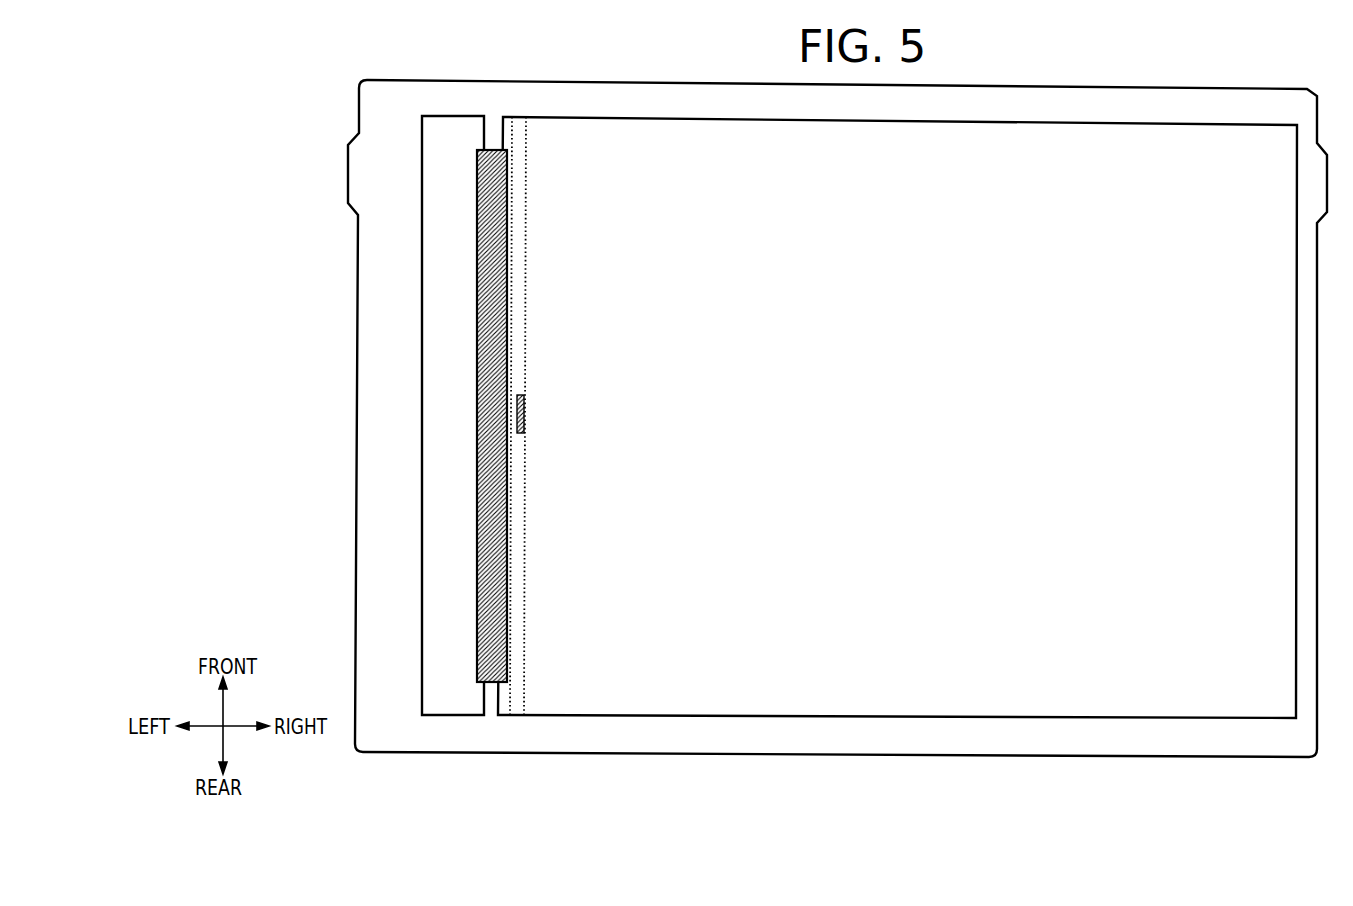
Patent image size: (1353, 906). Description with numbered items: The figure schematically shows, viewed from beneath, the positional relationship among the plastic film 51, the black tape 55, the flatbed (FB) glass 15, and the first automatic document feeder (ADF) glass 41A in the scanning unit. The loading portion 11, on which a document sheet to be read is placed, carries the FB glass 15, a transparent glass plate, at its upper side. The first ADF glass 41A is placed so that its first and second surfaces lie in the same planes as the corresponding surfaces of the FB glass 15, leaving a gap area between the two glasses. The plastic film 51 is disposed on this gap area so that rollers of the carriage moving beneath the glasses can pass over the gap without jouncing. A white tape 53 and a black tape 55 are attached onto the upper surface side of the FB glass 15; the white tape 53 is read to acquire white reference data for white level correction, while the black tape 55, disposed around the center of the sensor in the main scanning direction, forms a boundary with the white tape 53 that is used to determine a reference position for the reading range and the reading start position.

The loading portion 11 is at (358, 257).
The flatbed (FB) glass 15 is at (713, 119).
The first automatic document feeder (ADF) glass 41A is at (447, 116).
The plastic film 51 is at (492, 150).
The white tape 53 is at (533, 127).
The black tape 55 is at (524, 412).